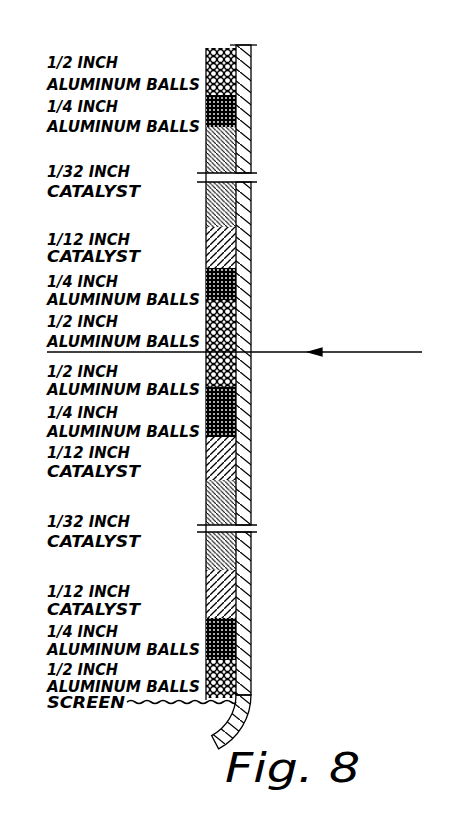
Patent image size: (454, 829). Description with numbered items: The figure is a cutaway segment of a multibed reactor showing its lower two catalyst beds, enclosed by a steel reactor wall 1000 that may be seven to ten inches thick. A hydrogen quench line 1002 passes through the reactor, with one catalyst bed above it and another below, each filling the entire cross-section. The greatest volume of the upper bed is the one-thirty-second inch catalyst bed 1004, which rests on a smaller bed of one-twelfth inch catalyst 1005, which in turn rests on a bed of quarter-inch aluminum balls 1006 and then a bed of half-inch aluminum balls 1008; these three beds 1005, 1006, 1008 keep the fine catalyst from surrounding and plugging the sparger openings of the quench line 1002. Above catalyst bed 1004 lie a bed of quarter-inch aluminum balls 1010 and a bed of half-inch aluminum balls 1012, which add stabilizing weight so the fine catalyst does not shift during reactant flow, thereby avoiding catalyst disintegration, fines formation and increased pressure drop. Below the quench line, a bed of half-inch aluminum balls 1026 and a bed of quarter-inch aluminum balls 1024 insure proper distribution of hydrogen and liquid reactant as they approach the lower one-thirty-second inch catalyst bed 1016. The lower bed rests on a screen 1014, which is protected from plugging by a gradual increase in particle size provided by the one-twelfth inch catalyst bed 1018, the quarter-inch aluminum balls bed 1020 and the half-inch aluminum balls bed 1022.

The steel reactor wall 1000 is at (244, 47).
The bed of 1/2 inch aluminum balls 1012 is at (236, 70).
The bed of 1/4 inch aluminum balls 1010 is at (236, 104).
The 1/32 inch catalyst bed 1004 is at (232, 193).
The 1/12 inch catalyst bed 1005 is at (224, 245).
The 1/4 inch aluminum balls bed 1006 is at (236, 279).
The bed of 1/2 inch aluminum balls 1008 is at (238, 318).
The hydrogen quench line 1002 is at (279, 352).
The bed of 1/2 inch aluminum balls 1026 is at (236, 380).
The bed of 1/4 inch aluminum balls 1024 is at (238, 429).
The 1/32 inch catalyst bed 1016 is at (236, 506).
The 1/12 inch catalyst bed 1018 is at (228, 594).
The 1/4 inch aluminum balls bed 1020 is at (236, 636).
The 1/2 inch aluminum balls bed 1022 is at (236, 668).
The screen 1014 is at (160, 706).